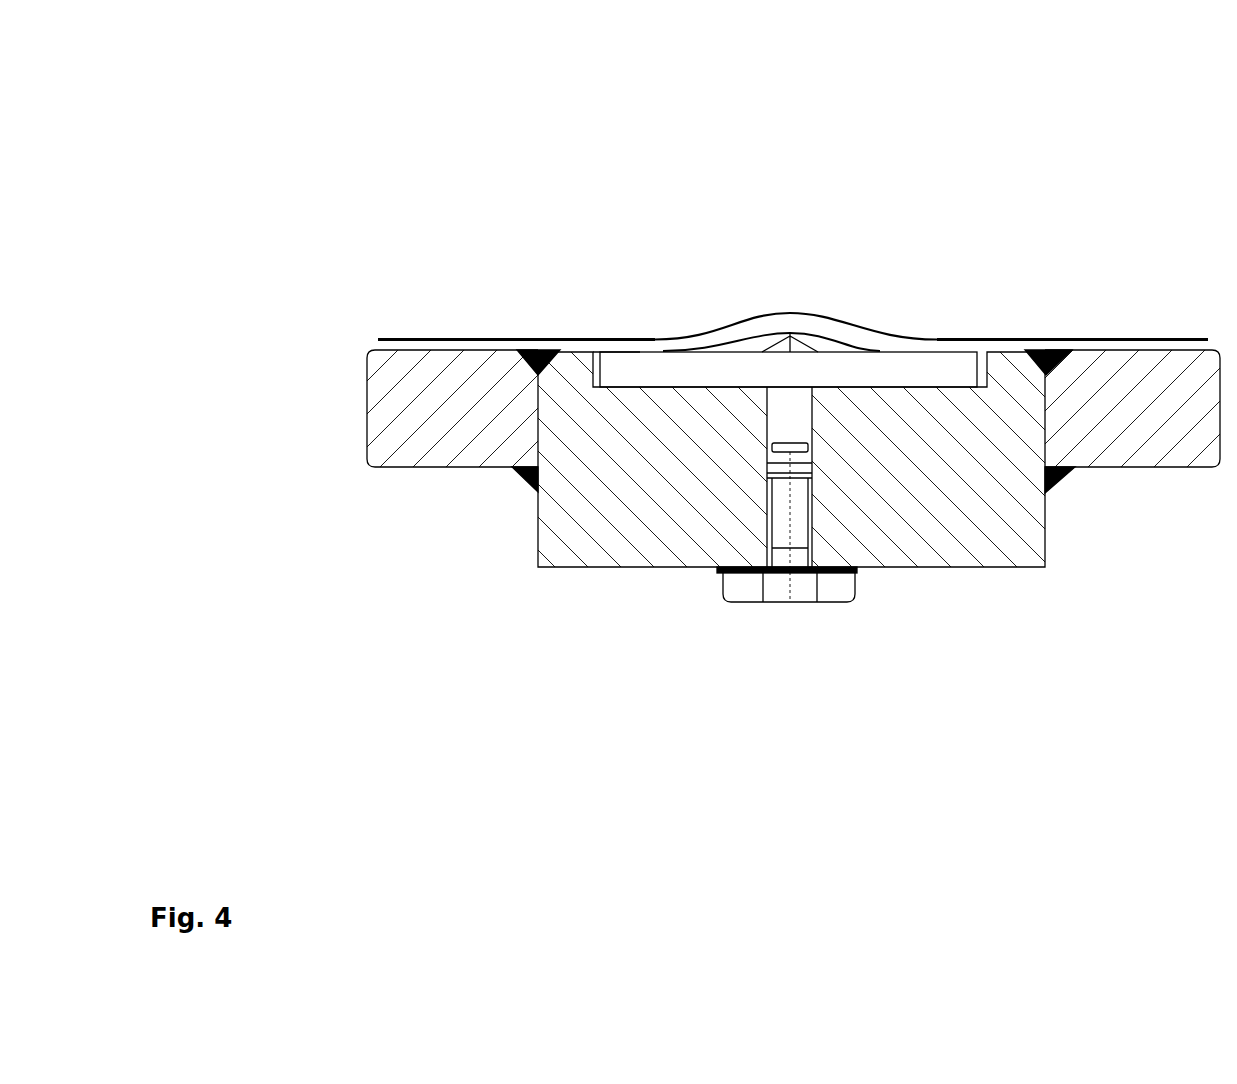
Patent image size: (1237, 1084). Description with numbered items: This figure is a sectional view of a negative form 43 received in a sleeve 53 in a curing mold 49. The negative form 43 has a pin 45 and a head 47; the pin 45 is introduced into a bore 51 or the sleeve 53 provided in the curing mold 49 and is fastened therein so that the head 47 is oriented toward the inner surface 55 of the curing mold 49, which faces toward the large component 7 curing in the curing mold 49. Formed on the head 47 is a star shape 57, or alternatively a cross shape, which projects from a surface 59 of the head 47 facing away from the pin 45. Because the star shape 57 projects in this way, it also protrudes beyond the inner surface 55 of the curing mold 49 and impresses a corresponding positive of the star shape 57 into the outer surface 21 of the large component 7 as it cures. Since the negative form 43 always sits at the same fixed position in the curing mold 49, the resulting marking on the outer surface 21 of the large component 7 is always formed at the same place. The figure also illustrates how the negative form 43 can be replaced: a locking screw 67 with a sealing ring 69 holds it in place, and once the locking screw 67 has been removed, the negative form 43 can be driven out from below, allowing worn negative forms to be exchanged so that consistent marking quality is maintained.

The large component 7 is at (731, 281).
The outer surface 21 is at (690, 335).
The negative form 43 is at (860, 332).
The pin 45 is at (792, 412).
The head 47 is at (948, 367).
The curing mold 49 is at (1110, 422).
The bore 51 is at (803, 457).
The sleeve 53 is at (623, 480).
The inner surface 55 is at (1012, 352).
The star shape 57 is at (792, 348).
The surface of the head 59 is at (623, 350).
The locking screw 67 is at (793, 513).
The sealing ring 69 is at (722, 570).